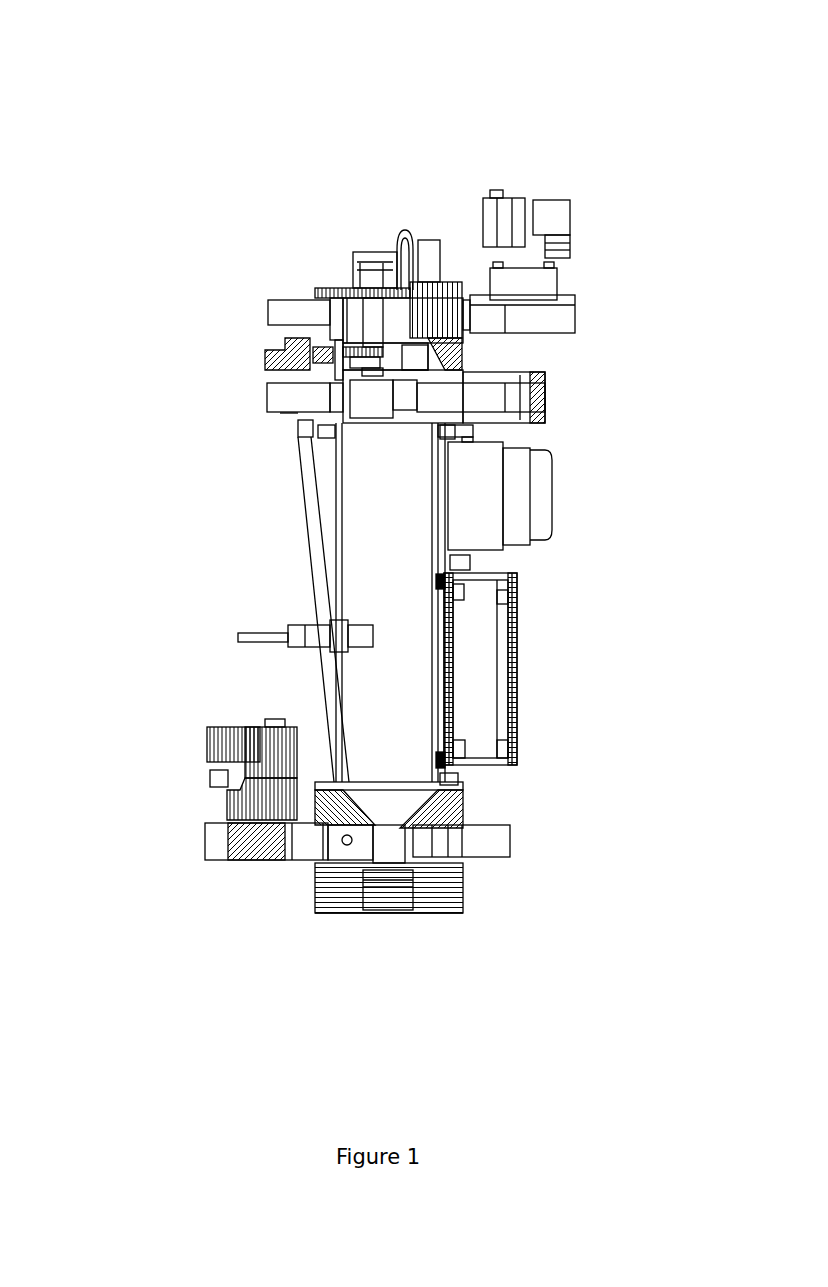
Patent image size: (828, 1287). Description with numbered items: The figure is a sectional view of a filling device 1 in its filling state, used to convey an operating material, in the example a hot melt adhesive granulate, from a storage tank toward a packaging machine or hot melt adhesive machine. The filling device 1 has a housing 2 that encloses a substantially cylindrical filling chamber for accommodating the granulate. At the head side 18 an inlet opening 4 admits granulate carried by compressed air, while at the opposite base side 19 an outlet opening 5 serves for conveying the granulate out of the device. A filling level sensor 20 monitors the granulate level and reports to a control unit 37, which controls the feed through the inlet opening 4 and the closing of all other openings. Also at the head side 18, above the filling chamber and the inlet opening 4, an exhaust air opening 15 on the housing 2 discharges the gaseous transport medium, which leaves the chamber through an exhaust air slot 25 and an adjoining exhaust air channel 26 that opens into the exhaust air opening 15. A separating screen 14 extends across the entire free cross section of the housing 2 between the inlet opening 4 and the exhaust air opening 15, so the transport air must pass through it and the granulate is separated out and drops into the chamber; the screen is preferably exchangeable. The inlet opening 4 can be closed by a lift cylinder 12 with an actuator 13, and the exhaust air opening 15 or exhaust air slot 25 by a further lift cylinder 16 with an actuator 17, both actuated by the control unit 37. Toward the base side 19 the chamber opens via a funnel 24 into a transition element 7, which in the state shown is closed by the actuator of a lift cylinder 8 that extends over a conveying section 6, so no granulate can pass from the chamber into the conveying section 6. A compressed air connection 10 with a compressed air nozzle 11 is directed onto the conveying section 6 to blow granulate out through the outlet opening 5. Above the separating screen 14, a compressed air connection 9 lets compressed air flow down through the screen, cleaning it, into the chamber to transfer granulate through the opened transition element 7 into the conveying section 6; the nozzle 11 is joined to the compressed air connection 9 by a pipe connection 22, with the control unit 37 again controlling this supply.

The filling device 1 is at (93, 170).
The housing 2 is at (428, 663).
The inlet opening 4 is at (292, 395).
The outlet opening 5 is at (500, 845).
The conveying section 6 is at (397, 842).
The transition element 7 is at (467, 810).
The lift cylinder 8 is at (383, 850).
The compressed air connection 9 is at (328, 325).
The compressed air connection 10 is at (210, 778).
The compressed air nozzle 11 is at (345, 866).
The lift cylinder 12 is at (468, 395).
The actuator 13 is at (490, 272).
The separating screen 14 is at (400, 375).
The exhaust air opening 15 is at (290, 315).
The lift cylinder 16 is at (357, 280).
The actuator 17 is at (384, 252).
The head side 18 is at (325, 62).
The base side 19 is at (368, 1038).
The filling level sensor 20 is at (378, 627).
The pipe connection 22 is at (312, 553).
The funnel 24 is at (303, 626).
The exhaust air slot 25 is at (403, 325).
The exhaust air channel 26 is at (348, 315).
The control unit 37 is at (478, 693).